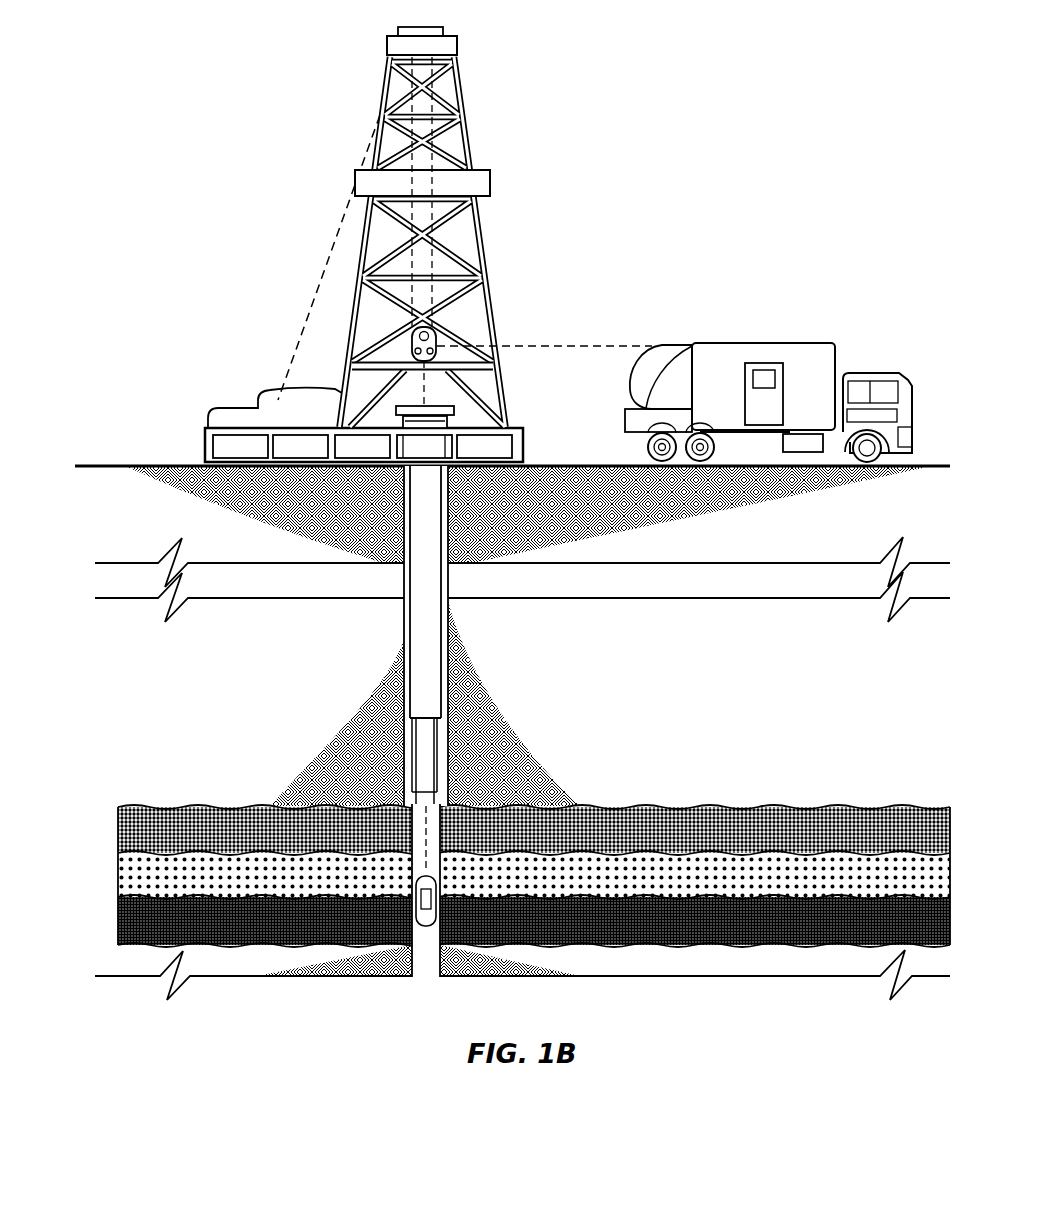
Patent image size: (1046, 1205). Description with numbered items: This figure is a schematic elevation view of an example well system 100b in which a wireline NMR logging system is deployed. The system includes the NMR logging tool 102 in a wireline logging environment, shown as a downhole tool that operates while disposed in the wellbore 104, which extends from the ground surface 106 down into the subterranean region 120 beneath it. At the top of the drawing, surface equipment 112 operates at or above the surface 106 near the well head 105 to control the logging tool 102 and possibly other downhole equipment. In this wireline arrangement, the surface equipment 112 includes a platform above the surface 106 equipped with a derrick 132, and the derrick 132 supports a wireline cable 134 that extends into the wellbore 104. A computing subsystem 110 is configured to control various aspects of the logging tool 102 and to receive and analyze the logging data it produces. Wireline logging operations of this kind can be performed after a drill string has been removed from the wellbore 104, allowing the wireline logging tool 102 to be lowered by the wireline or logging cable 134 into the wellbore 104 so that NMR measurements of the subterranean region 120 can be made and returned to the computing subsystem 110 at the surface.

The well system 100b is at (153, 74).
The derrick 132 is at (473, 150).
The surface equipment 112 is at (571, 260).
The computing subsystem 110 is at (762, 362).
The wireline cable 134 is at (417, 390).
The well head 105 is at (440, 403).
The ground surface 106 is at (549, 465).
The wellbore 104 is at (403, 622).
The subterranean region 120 is at (672, 738).
The logging tool 102 is at (410, 918).